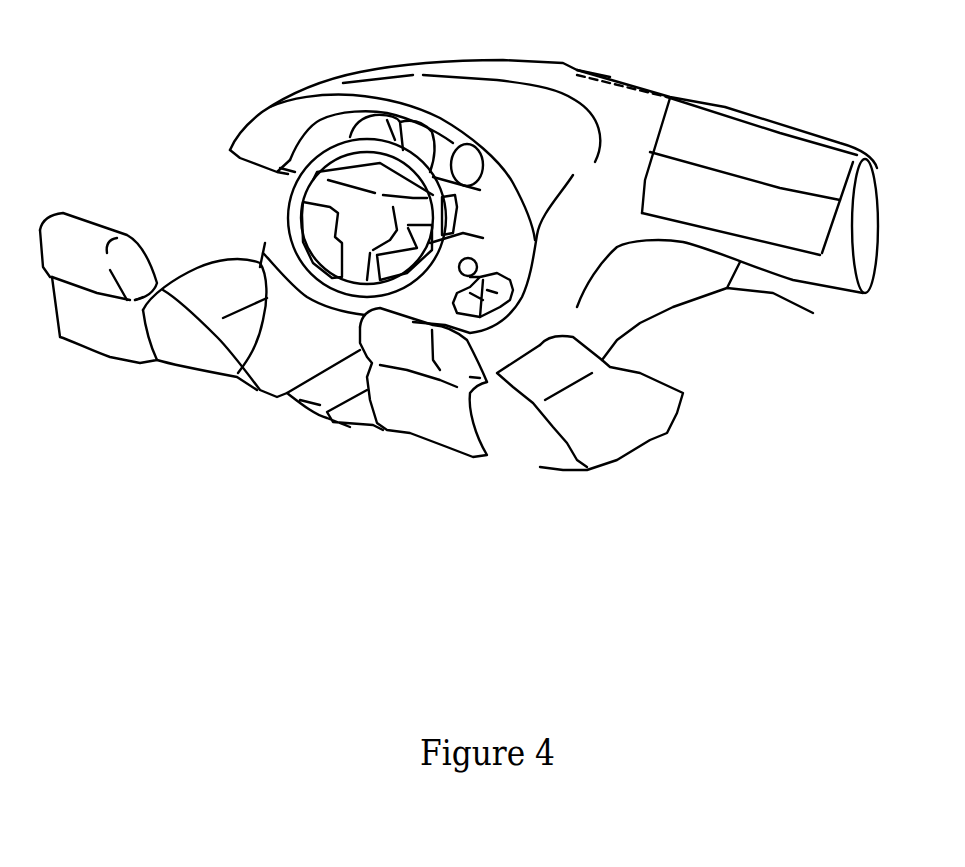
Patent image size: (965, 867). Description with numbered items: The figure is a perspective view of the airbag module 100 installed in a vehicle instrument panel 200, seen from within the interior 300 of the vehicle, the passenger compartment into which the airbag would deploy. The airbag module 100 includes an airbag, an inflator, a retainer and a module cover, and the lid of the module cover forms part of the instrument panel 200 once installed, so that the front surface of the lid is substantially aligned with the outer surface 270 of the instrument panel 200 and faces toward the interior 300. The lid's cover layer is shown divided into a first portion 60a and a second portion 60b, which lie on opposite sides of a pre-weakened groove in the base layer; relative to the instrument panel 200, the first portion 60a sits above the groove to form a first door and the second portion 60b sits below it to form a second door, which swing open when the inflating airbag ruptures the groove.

The airbag module 100 is at (770, 162).
The first portion 60a is at (823, 170).
The second portion 60b is at (823, 240).
The outer surface 270 is at (853, 195).
The vehicle instrument panel 200 is at (243, 170).
The interior 300 is at (243, 363).